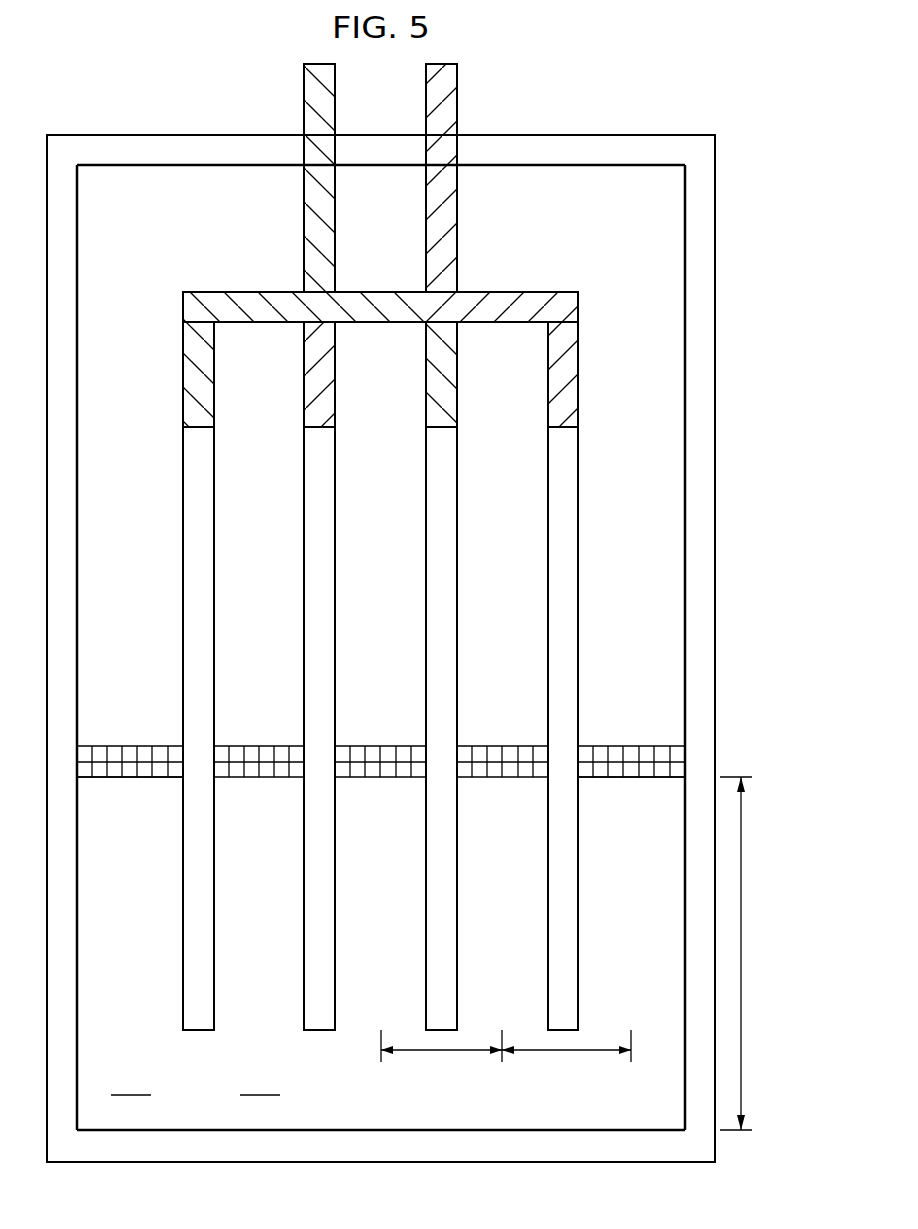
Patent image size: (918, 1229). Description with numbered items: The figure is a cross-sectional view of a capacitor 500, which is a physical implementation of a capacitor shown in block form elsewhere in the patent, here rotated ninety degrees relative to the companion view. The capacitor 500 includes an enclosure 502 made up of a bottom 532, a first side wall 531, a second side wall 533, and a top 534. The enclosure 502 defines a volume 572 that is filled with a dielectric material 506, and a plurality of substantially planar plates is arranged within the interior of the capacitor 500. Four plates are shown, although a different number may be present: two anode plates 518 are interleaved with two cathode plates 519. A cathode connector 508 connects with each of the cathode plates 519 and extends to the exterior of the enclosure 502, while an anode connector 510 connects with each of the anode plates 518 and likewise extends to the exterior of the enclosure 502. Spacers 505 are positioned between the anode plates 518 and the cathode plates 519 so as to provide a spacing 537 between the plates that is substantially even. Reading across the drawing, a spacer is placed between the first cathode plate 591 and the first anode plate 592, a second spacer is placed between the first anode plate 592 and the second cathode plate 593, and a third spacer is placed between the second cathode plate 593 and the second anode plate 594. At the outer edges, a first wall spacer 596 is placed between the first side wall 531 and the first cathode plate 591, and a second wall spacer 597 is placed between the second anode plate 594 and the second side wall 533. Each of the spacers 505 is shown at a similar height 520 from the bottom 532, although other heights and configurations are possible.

The capacitor 500 is at (180, 78).
The enclosure 502 is at (592, 128).
The spacers 505 is at (130, 745).
The dielectric material 506 is at (260, 1080).
The cathode connector 508 is at (303, 102).
The anode connector 510 is at (458, 102).
The anode plates 518 is at (303, 888).
The cathode plates 519 is at (182, 940).
The height 520 is at (745, 953).
The first side wall 531 is at (79, 231).
The bottom 532 is at (356, 1129).
The second side wall 533 is at (683, 231).
The top 534 is at (236, 167).
The spacing 537 is at (466, 1053).
The volume 572 is at (131, 1080).
The first cathode plate 591 is at (182, 360).
The first anode plate 592 is at (303, 515).
The second cathode plate 593 is at (458, 515).
The second anode plate 594 is at (579, 360).
The first wall spacer 596 is at (130, 779).
The second wall spacer 597 is at (634, 779).